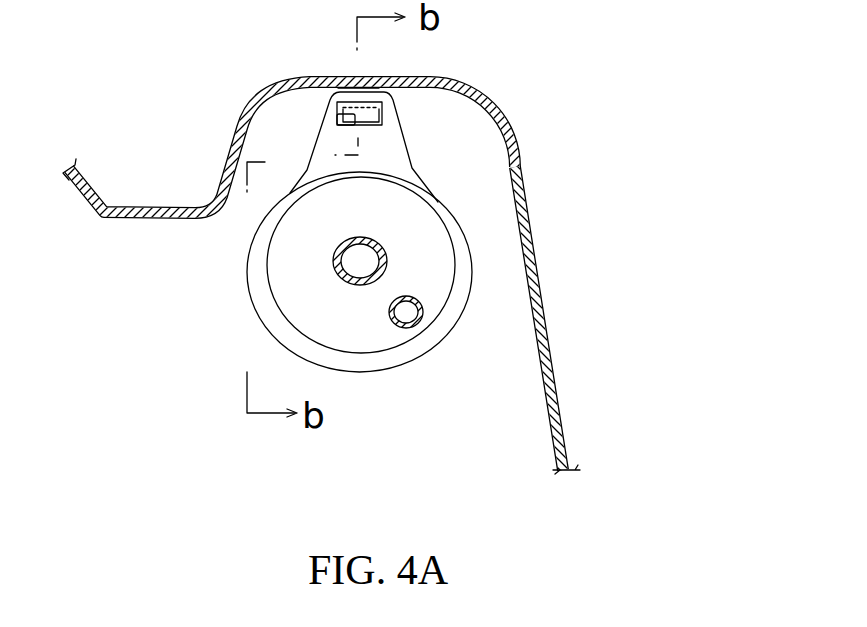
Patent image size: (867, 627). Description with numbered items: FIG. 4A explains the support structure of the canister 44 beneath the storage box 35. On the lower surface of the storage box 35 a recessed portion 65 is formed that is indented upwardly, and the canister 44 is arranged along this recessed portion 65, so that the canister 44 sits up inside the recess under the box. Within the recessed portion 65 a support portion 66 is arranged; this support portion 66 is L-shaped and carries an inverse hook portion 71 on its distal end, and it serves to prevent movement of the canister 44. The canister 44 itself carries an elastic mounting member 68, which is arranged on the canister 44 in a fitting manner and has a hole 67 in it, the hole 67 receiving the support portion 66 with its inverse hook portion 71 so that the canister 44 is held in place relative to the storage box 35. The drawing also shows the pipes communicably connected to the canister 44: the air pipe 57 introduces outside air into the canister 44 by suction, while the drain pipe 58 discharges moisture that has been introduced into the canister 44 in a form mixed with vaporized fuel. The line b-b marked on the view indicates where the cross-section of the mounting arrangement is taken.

The storage box 35 is at (541, 228).
The canister 44 is at (444, 350).
The air pipe 57 is at (336, 247).
The drain pipe 58 is at (428, 298).
The recessed portion 65 is at (440, 90).
The support portion 66 is at (331, 103).
The hole 67 is at (337, 109).
The elastic mounting member 68 is at (392, 372).
The inverse hook portion 71 is at (372, 126).